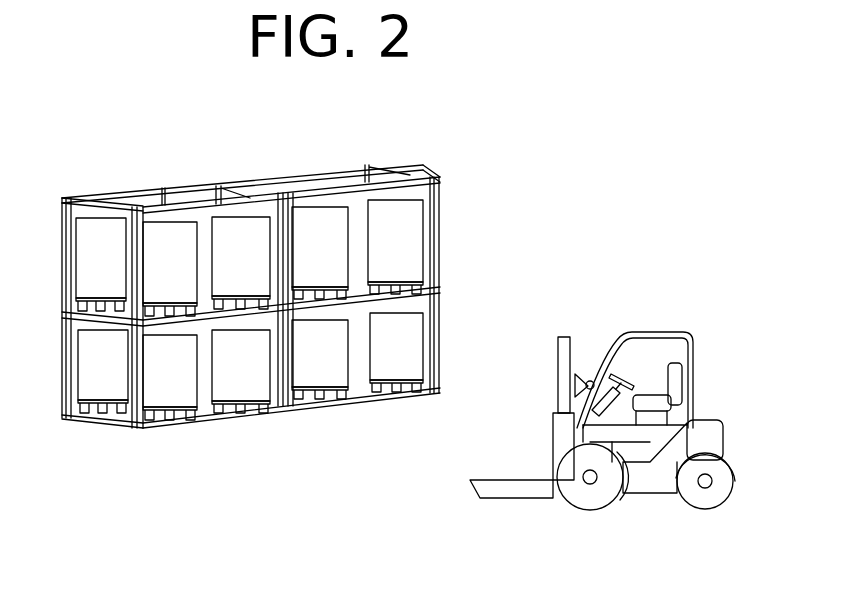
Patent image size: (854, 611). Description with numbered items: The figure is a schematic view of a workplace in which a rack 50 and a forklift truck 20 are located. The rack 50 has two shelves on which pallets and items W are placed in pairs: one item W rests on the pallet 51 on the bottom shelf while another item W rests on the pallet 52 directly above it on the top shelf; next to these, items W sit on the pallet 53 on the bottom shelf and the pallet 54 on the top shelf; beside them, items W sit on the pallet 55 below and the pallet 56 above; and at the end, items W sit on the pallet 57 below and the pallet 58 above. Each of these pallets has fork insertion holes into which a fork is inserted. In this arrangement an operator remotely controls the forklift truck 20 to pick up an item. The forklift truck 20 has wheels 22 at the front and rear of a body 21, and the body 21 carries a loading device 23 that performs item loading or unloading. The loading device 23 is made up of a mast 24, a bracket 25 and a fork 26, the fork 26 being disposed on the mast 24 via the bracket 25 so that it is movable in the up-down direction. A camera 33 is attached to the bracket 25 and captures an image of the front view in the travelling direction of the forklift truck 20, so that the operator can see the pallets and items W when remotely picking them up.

The rack 50 is at (440, 177).
The pallet 51 is at (176, 411).
The pallet 52 is at (173, 300).
The pallet 53 is at (251, 405).
The pallet 54 is at (250, 296).
The pallet 55 is at (322, 389).
The pallet 56 is at (322, 284).
The pallet 57 is at (400, 386).
The pallet 58 is at (400, 282).
The item W is at (95, 255).
The forklift truck 20 is at (690, 331).
The body 21 is at (705, 426).
The wheels 22 is at (603, 511).
The loading device 23 is at (544, 451).
The mast 24 is at (557, 356).
The bracket 25 is at (553, 430).
The fork 26 is at (515, 499).
The camera 33 is at (588, 376).